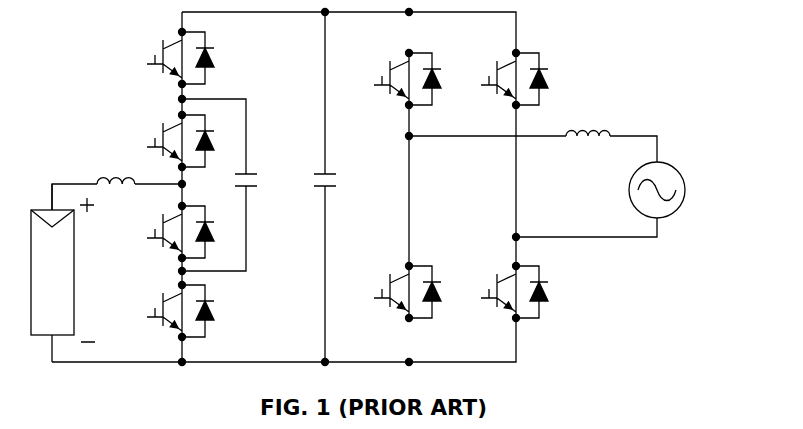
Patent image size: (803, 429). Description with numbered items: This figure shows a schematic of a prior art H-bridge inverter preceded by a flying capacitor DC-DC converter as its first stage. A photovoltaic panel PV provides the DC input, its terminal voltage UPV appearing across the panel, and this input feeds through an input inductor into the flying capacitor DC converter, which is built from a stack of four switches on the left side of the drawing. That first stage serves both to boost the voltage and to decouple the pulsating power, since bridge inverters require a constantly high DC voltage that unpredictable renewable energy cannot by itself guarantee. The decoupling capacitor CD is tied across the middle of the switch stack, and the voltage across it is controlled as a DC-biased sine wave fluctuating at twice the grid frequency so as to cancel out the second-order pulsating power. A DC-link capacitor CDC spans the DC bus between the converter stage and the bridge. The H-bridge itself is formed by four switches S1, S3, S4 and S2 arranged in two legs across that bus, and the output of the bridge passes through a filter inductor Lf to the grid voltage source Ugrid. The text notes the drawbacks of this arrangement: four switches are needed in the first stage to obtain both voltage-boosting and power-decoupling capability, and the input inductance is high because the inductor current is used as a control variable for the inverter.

The PV panel PV is at (63, 273).
The photovoltaic voltage UPV is at (107, 274).
The decoupling capacitor CD is at (263, 183).
The DC-link capacitor CDC is at (349, 183).
The switch S1 is at (395, 79).
The switch S2 is at (501, 292).
The switch S3 is at (501, 79).
The switch S4 is at (395, 292).
The filter inductor Lf is at (588, 115).
The grid voltage source Ugrid is at (686, 190).